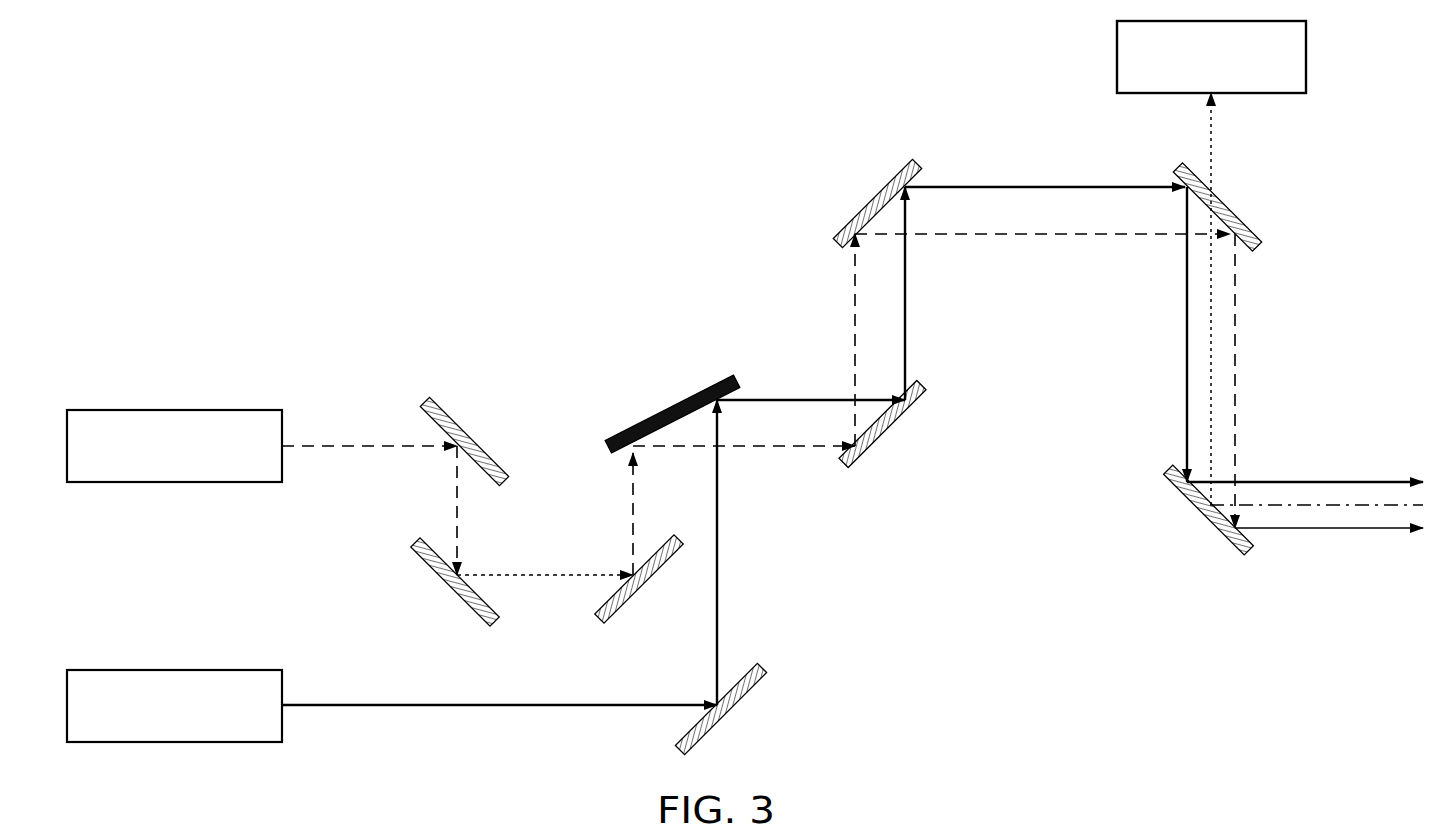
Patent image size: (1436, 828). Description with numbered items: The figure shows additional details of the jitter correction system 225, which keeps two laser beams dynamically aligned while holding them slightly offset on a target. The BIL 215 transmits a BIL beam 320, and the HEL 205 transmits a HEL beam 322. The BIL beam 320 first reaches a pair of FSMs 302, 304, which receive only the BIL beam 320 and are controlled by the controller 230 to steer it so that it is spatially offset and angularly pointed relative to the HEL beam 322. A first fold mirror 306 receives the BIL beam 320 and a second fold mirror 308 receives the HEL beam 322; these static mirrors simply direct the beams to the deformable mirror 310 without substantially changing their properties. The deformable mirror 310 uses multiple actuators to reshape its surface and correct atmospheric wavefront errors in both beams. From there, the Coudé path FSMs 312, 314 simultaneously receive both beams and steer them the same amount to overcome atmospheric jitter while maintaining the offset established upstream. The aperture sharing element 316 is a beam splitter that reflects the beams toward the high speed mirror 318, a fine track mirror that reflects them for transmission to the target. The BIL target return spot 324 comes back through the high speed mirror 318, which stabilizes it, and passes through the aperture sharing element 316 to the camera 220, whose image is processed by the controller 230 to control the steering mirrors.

The HEL 205 is at (175, 743).
The BIL 215 is at (175, 410).
The camera 220 is at (1308, 57).
The controller 230 is at (1211, 57).
The jitter correction system 225 is at (478, 148).
The FSM 302 is at (477, 447).
The FSM 304 is at (458, 595).
The first fold mirror 306 is at (625, 597).
The second fold mirror 308 is at (718, 725).
The deformable mirror 310 is at (668, 408).
The Coudé path FSM 312 is at (893, 430).
The Coudé path FSM 314 is at (873, 202).
The aperture sharing element 316 is at (1255, 198).
The high speed mirror 318 is at (1202, 515).
The BIL beam 320 is at (375, 443).
The HEL beam 322 is at (490, 707).
The BIL target return spot 324 is at (1213, 140).